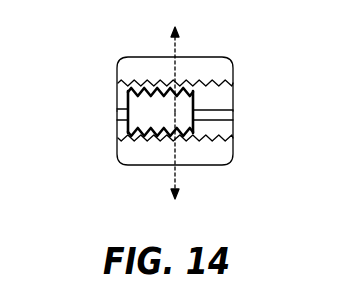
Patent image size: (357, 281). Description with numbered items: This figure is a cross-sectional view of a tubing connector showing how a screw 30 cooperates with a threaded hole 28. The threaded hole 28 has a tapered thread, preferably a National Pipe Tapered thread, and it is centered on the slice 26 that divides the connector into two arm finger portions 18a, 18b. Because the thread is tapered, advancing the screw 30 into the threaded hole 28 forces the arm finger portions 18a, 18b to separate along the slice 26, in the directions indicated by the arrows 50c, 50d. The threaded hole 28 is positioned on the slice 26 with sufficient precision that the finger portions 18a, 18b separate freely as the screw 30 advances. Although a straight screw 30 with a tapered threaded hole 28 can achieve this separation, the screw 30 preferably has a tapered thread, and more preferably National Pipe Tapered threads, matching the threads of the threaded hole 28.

The arm finger portion 18a is at (202, 70).
The arm finger portion 18b is at (208, 147).
The slice 26 is at (222, 111).
The threaded hole 28 is at (215, 129).
The screw 30 is at (157, 113).
The arrow 50c is at (170, 41).
The arrow 50d is at (168, 170).